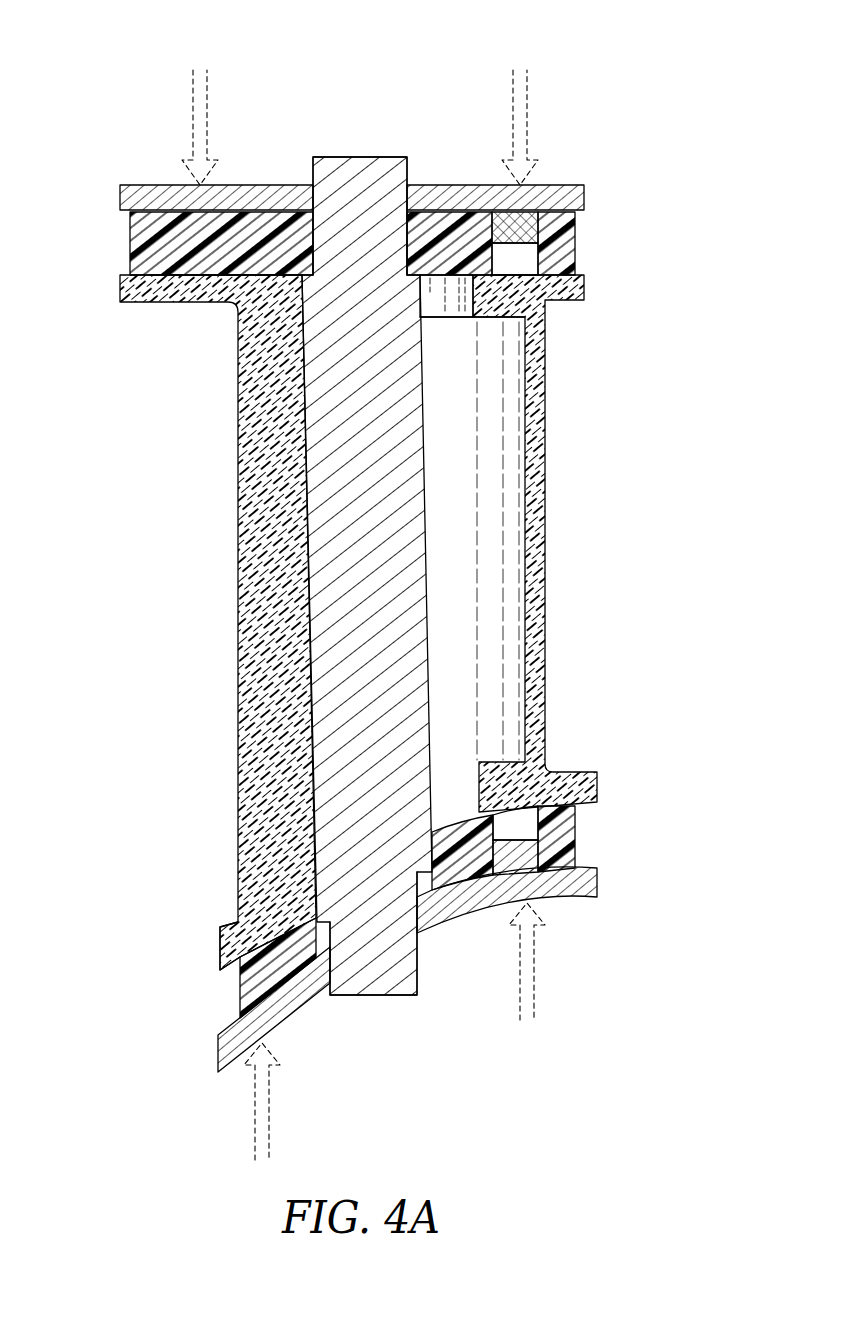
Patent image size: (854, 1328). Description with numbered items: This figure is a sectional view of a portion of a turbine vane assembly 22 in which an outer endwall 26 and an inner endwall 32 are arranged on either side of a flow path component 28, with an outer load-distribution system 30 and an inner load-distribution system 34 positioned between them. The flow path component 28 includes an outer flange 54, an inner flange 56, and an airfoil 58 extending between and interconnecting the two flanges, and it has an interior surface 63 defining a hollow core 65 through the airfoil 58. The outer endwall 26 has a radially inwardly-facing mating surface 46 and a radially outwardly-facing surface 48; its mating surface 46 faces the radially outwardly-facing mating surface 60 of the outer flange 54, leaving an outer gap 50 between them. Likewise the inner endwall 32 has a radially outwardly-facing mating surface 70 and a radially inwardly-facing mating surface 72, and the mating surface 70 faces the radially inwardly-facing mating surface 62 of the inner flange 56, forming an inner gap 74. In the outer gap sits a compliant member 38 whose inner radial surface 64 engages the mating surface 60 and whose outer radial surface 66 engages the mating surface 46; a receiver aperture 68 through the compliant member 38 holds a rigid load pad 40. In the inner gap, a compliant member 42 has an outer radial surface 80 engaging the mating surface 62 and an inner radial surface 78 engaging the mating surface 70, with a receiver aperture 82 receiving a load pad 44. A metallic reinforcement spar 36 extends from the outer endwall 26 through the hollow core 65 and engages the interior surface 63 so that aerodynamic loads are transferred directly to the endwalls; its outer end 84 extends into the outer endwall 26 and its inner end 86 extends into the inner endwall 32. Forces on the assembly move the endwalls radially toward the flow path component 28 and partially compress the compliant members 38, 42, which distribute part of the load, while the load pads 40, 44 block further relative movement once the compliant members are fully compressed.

The actuator assembly 22 is at (722, 94).
The outer endwall 26 is at (252, 180).
The flow path component 28 is at (190, 553).
The load-distribution system 30 is at (127, 246).
The inner endwall 32 is at (610, 880).
The load-distribution system 34 is at (230, 1003).
The reinforcement spar 36 is at (436, 606).
The compliant member 38 is at (587, 232).
The load pad 40 is at (520, 251).
The compliant member 42 is at (585, 851).
The load pad 44 is at (526, 840).
The radially inwardly-facing mating surface 46 is at (455, 213).
The radially outwardly-facing surface 48 is at (282, 184).
The outer gap 50 is at (127, 219).
The outer flange 54 is at (156, 307).
The inner flange 56 is at (217, 940).
The airfoil 58 is at (229, 457).
The radially outwardly-facing mating surface 60 is at (210, 274).
The radially inwardly-facing mating surface 62 is at (290, 917).
The interior surface 63 is at (492, 530).
The inner radial surface 64 is at (460, 295).
The hollow core 65 is at (489, 406).
The outer radial surface 66 is at (553, 212).
The receiver aperture 68 is at (516, 272).
The radially outwardly-facing mating surface 70 is at (300, 978).
The radially inwardly-facing mating surface 72 is at (562, 898).
The inner gap 74 is at (232, 975).
The inner radial surface 78 is at (458, 893).
The outer radial surface 80 is at (468, 818).
The receiver aperture 82 is at (506, 812).
The outer end 84 is at (414, 160).
The inner end 86 is at (424, 978).